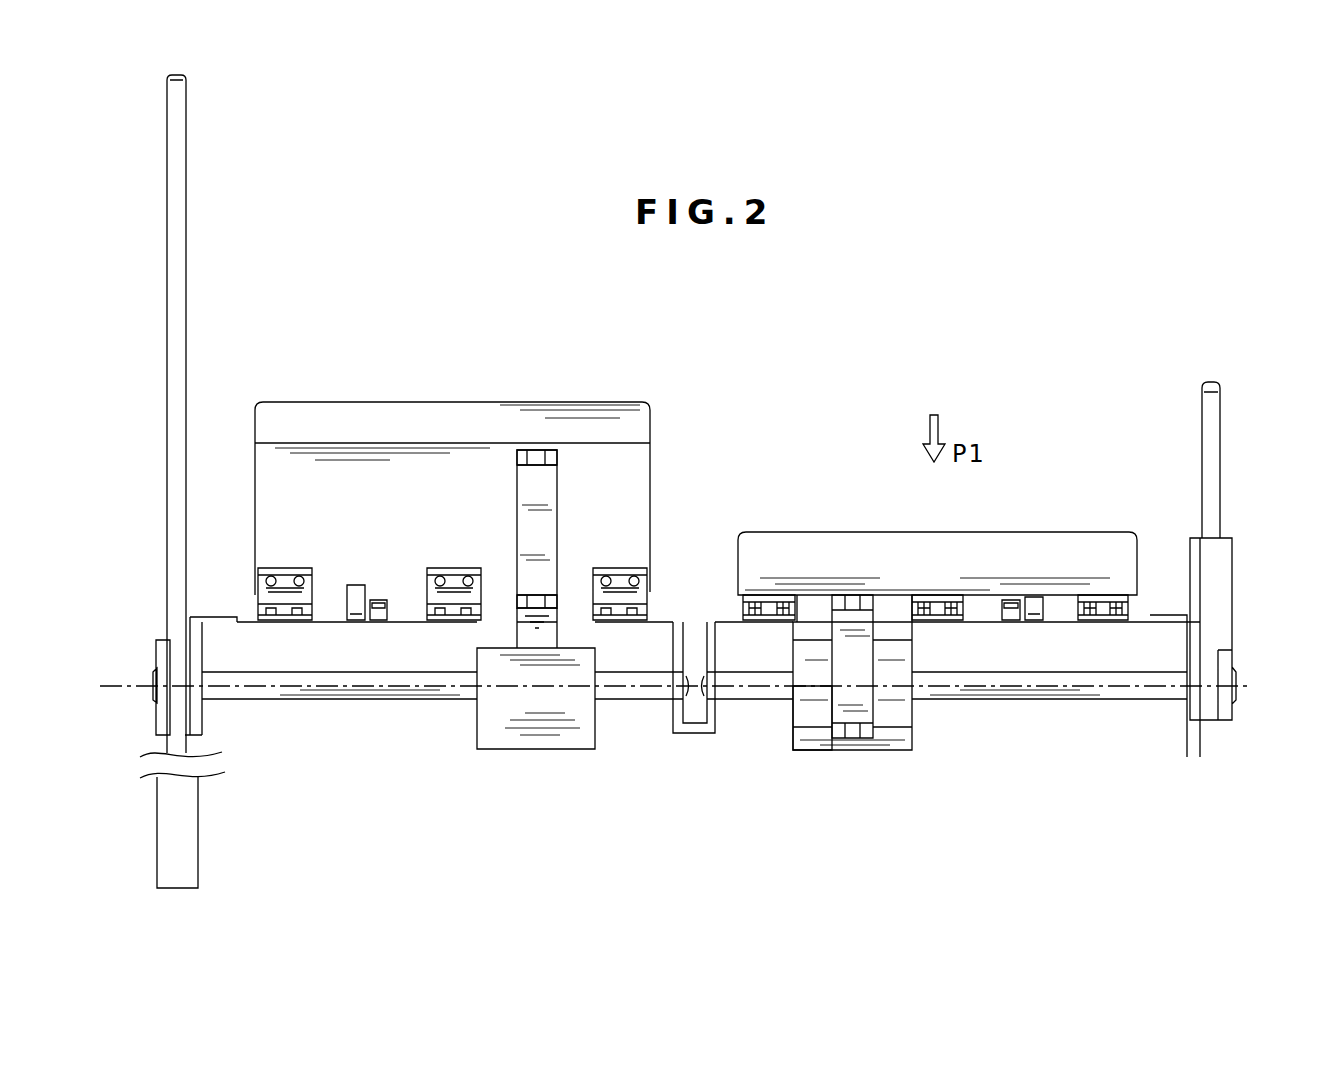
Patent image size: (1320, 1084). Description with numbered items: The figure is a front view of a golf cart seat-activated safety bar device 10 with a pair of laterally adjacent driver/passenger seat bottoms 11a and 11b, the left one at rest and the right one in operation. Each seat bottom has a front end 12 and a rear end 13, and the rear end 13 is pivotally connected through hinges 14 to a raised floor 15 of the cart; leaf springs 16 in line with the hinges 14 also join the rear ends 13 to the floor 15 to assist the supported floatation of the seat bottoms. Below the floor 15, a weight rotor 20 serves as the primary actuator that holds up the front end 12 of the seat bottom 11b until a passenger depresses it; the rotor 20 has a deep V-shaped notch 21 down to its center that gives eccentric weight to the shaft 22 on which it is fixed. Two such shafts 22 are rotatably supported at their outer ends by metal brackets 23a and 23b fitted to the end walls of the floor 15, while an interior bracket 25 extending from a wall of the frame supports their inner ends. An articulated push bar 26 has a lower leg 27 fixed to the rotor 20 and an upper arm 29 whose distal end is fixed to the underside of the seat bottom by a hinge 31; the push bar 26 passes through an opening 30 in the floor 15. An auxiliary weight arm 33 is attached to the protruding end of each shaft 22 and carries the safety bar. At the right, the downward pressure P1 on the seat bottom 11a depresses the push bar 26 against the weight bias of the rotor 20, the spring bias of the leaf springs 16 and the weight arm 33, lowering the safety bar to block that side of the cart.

The safety bar device 10 is at (378, 268).
The seat bottom 11a is at (830, 532).
The seat bottom 11b is at (642, 480).
The front end 12 is at (360, 405).
The rear end 13 is at (388, 622).
The hinge 14 is at (358, 585).
The raised floor 15 is at (663, 620).
The leaf spring 16 is at (285, 568).
The weight rotor 20 is at (578, 745).
The V-shaped notch 21 is at (808, 712).
The shaft 22 is at (398, 701).
The bracket 23a is at (1188, 618).
The bracket 23b is at (200, 612).
The interior bracket 25 is at (690, 735).
The articulated push bar 26 is at (557, 572).
The lower leg 27 is at (528, 632).
The upper arm 29 is at (545, 510).
The opening 30 is at (188, 228).
The hinge 31 is at (535, 452).
The auxiliary weight arm 33 is at (190, 830).